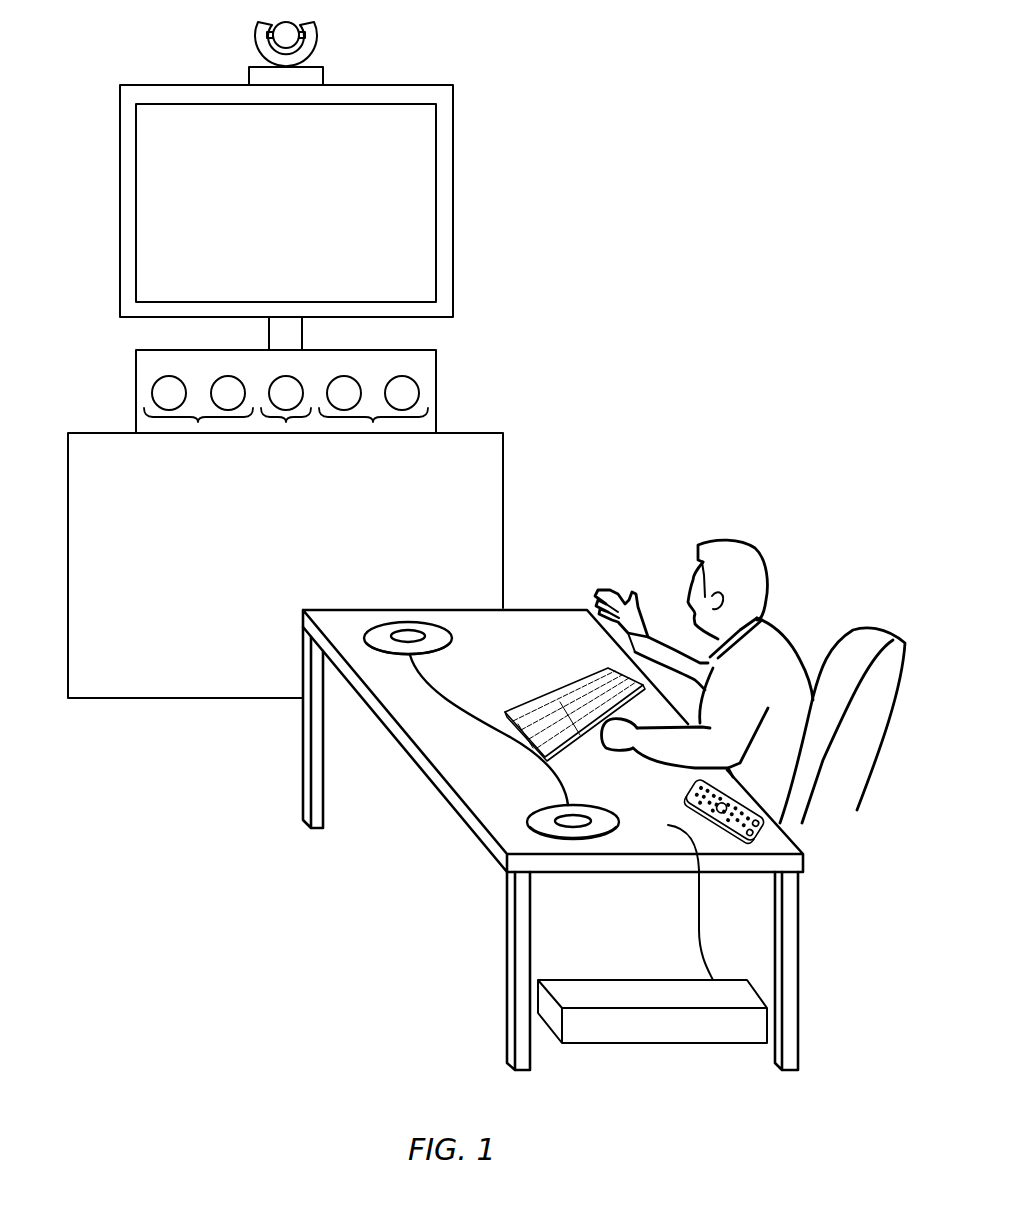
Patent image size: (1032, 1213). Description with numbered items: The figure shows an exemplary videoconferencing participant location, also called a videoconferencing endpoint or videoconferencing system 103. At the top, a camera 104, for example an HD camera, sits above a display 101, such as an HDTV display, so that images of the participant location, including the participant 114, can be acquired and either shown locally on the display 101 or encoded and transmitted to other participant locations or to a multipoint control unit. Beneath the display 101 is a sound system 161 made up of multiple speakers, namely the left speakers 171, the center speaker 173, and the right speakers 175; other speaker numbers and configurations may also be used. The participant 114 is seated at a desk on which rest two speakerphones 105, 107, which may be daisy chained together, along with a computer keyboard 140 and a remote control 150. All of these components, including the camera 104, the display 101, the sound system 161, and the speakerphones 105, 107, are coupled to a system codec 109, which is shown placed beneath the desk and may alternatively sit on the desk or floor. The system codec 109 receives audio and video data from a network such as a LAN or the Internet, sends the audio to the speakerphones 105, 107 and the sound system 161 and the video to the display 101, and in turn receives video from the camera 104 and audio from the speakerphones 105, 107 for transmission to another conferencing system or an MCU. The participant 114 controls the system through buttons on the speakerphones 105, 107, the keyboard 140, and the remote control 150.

The display 101 is at (405, 150).
The videoconferencing system 103 is at (573, 87).
The camera 104 is at (316, 30).
The speakerphone 105 is at (545, 803).
The speakerphone 107 is at (452, 633).
The system codec 109 is at (675, 1043).
The participant 114 is at (750, 555).
The computer keyboard 140 is at (563, 688).
The remote control 150 is at (690, 790).
The sound system 161 is at (437, 365).
The left speakers 171 is at (198, 422).
The center speaker 173 is at (286, 422).
The right speakers 175 is at (373, 422).